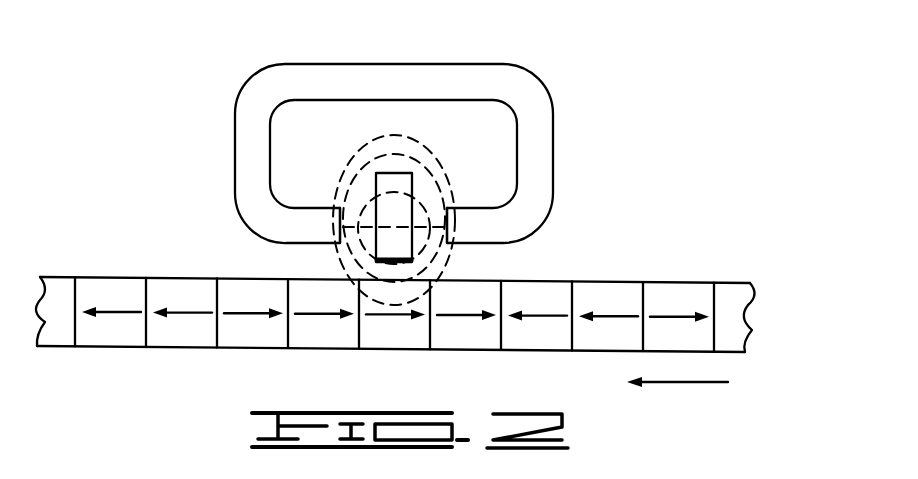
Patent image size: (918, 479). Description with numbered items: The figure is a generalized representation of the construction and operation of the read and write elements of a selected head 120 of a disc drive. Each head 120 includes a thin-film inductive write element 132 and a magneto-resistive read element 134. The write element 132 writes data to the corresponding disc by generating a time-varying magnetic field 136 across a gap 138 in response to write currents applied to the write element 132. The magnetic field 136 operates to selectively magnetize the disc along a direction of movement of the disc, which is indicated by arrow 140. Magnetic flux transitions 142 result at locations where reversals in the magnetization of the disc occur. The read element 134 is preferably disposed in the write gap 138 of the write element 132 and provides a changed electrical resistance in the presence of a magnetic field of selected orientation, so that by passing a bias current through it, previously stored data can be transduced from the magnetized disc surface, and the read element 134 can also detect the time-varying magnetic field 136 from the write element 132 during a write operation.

The head 120 is at (358, 160).
The write element 132 is at (248, 153).
The read element 134 is at (393, 183).
The magnetic field 136 is at (440, 155).
The gap 138 is at (358, 207).
The arrow 140 is at (690, 383).
The magnetic flux transitions 142 is at (636, 272).